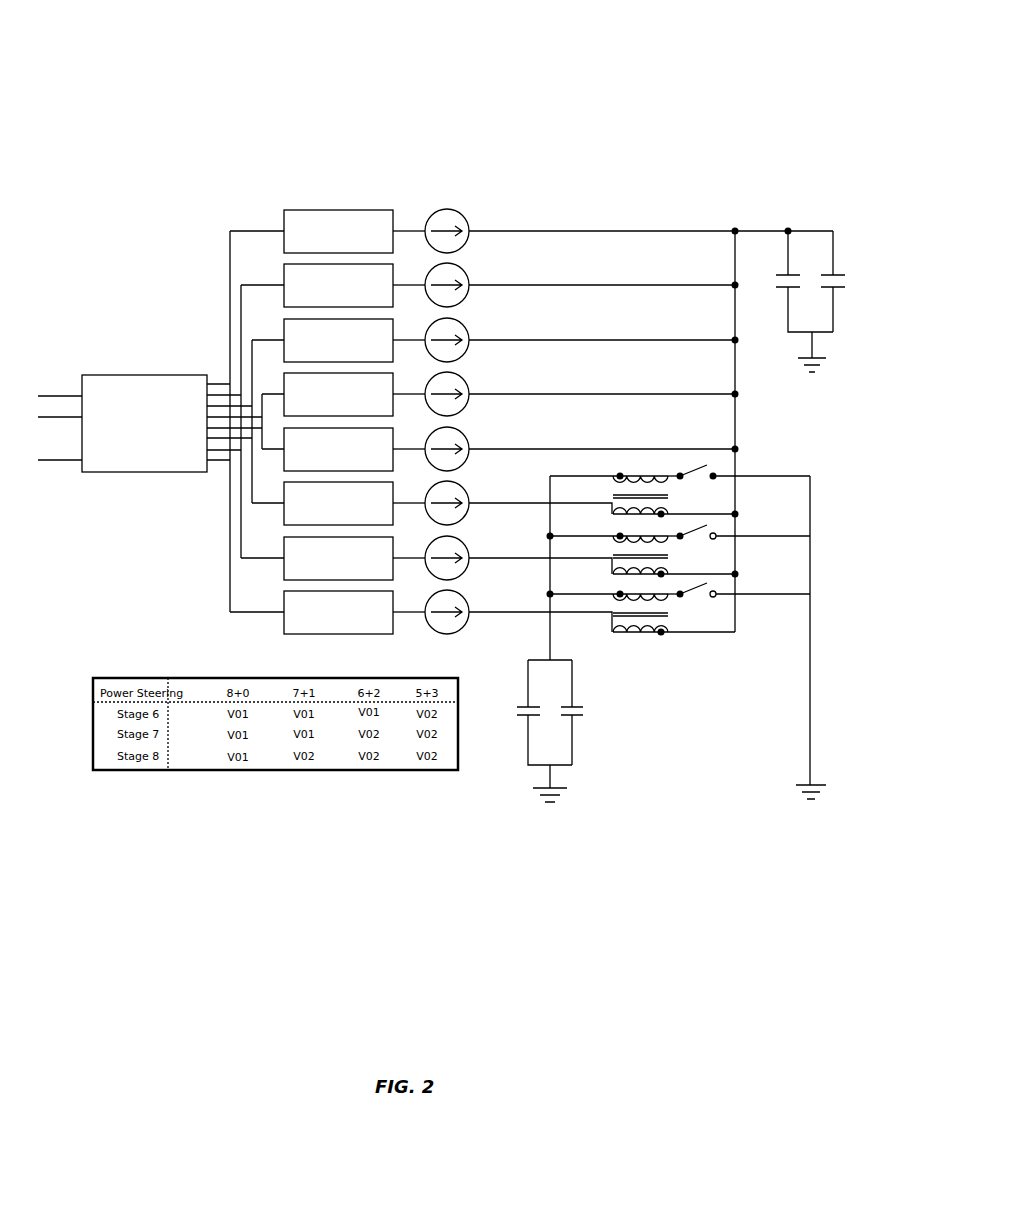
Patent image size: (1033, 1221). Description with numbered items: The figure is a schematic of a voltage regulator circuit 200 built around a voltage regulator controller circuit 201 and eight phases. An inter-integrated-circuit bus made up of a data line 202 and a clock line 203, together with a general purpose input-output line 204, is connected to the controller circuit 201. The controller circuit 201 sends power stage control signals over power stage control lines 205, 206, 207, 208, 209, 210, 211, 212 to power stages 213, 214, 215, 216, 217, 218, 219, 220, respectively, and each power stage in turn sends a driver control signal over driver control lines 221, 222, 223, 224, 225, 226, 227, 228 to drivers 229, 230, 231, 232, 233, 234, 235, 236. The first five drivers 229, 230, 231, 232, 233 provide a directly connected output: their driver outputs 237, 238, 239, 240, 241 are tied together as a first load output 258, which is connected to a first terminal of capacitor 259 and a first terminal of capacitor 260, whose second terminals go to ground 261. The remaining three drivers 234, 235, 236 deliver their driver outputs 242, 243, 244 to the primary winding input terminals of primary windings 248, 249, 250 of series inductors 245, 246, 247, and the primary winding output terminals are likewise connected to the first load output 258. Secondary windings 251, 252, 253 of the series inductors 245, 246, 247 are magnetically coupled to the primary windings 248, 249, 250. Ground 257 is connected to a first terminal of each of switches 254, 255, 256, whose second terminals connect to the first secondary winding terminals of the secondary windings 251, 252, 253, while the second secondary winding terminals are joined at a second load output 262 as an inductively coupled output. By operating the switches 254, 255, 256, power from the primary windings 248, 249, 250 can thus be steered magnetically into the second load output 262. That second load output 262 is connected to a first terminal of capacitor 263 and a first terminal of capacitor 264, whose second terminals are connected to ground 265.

The voltage regulator system 200 is at (755, 62).
The voltage regulator controller circuit 201 is at (134, 374).
The data line 202 is at (50, 417).
The clock line 203 is at (62, 397).
The general purpose input-output line 204 is at (62, 462).
The power stage control line 205 is at (248, 232).
The power stage control line 206 is at (240, 297).
The power stage control line 207 is at (250, 350).
The power stage control line 208 is at (282, 382).
The power stage control line 209 is at (260, 438).
The power stage control line 210 is at (252, 493).
The power stage control line 211 is at (240, 538).
The power stage control line 212 is at (230, 588).
The power stage 213 is at (282, 213).
The power stage 214 is at (282, 268).
The power stage 215 is at (283, 323).
The power stage 216 is at (260, 407).
The power stage 217 is at (265, 447).
The power stage 218 is at (283, 514).
The power stage 219 is at (283, 572).
The power stage 220 is at (283, 625).
The driver control line 221 is at (408, 230).
The driver control line 222 is at (405, 283).
The driver control line 223 is at (405, 338).
The driver control line 224 is at (405, 392).
The driver control line 225 is at (405, 447).
The driver control line 226 is at (405, 501).
The driver control line 227 is at (405, 556).
The driver control line 228 is at (405, 610).
The driver 229 is at (467, 220).
The driver 230 is at (468, 277).
The driver 231 is at (468, 330).
The driver 232 is at (468, 388).
The driver 233 is at (468, 440).
The driver 234 is at (470, 493).
The driver 235 is at (470, 548).
The driver 236 is at (470, 598).
The driver output 237 is at (590, 232).
The driver output 238 is at (583, 290).
The driver output 239 is at (587, 342).
The driver output 240 is at (593, 395).
The driver output 241 is at (590, 450).
The driver output 242 is at (490, 503).
The driver output 243 is at (490, 557).
The driver output 244 is at (490, 612).
The series inductor 245 is at (617, 493).
The series inductor 246 is at (617, 553).
The series inductor 247 is at (670, 612).
The primary winding 248 is at (612, 517).
The primary winding 249 is at (612, 577).
The primary winding 250 is at (612, 628).
The secondary winding 251 is at (668, 485).
The secondary winding 252 is at (670, 537).
The secondary winding 253 is at (670, 593).
The switch 254 is at (687, 465).
The switch 255 is at (693, 523).
The switch 256 is at (695, 590).
The ground 257 is at (810, 695).
The first load output 258 is at (753, 232).
The capacitor 259 is at (784, 273).
The capacitor 260 is at (830, 275).
The ground 261 is at (810, 352).
The second load output 262 is at (550, 640).
The capacitor 263 is at (525, 704).
The capacitor 264 is at (575, 704).
The ground 265 is at (550, 778).